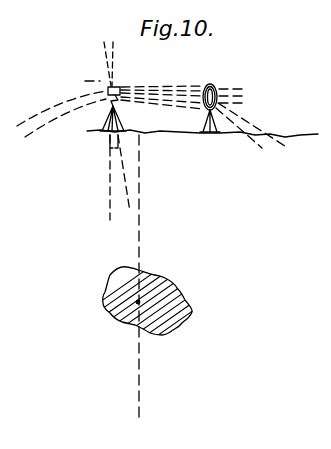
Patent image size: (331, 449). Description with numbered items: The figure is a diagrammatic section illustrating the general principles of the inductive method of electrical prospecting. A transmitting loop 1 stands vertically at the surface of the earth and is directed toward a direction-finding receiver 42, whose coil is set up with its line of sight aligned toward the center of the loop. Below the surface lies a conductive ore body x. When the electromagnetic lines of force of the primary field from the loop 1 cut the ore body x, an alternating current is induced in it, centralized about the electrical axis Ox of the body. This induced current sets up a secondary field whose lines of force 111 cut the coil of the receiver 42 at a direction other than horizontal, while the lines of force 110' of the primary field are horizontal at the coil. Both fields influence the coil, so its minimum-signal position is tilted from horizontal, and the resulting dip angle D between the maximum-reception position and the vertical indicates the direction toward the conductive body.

The lines of force of the secondary field 111 is at (58, 108).
The direction-finding receiver 42 is at (118, 87).
The transmitting loop 1 is at (212, 84).
The lines of force of the primary field 110' is at (255, 105).
The dip angle D is at (110, 152).
The ore body X is at (188, 303).
The electrical axis of the conductive body Ox is at (138, 302).